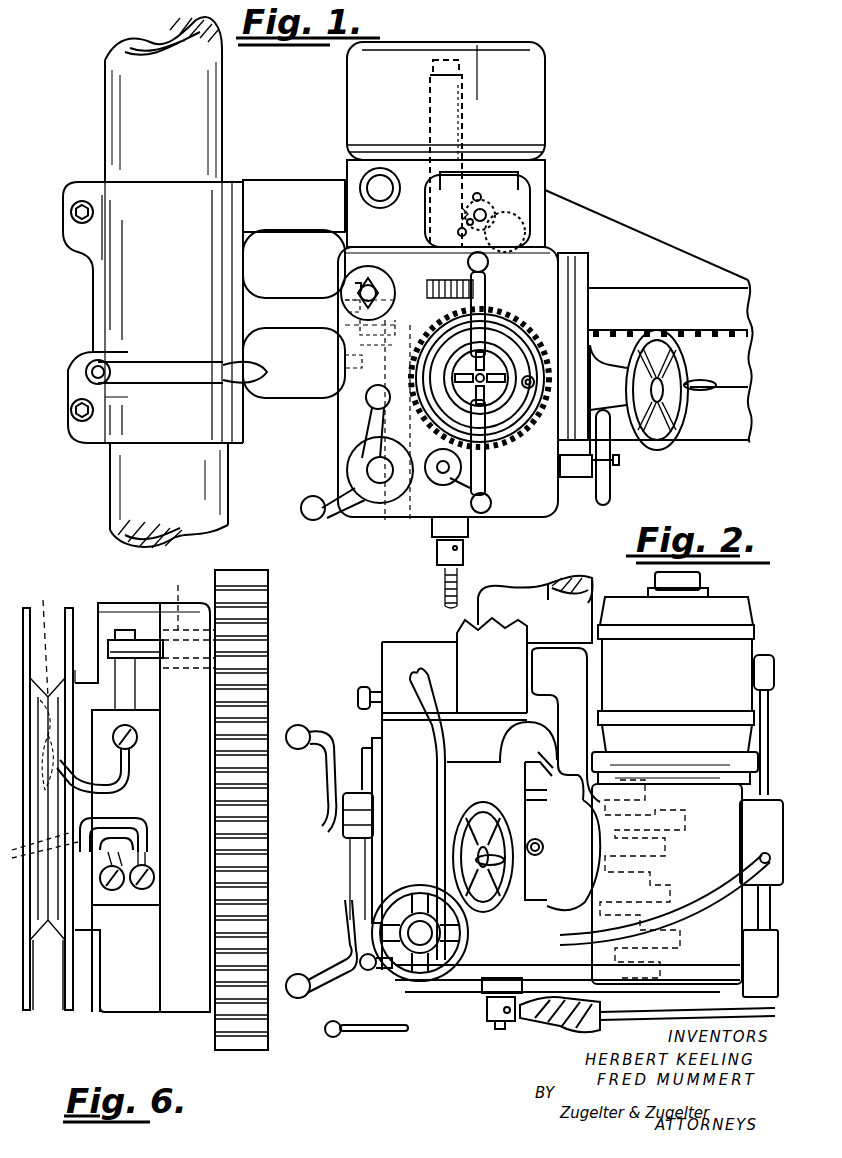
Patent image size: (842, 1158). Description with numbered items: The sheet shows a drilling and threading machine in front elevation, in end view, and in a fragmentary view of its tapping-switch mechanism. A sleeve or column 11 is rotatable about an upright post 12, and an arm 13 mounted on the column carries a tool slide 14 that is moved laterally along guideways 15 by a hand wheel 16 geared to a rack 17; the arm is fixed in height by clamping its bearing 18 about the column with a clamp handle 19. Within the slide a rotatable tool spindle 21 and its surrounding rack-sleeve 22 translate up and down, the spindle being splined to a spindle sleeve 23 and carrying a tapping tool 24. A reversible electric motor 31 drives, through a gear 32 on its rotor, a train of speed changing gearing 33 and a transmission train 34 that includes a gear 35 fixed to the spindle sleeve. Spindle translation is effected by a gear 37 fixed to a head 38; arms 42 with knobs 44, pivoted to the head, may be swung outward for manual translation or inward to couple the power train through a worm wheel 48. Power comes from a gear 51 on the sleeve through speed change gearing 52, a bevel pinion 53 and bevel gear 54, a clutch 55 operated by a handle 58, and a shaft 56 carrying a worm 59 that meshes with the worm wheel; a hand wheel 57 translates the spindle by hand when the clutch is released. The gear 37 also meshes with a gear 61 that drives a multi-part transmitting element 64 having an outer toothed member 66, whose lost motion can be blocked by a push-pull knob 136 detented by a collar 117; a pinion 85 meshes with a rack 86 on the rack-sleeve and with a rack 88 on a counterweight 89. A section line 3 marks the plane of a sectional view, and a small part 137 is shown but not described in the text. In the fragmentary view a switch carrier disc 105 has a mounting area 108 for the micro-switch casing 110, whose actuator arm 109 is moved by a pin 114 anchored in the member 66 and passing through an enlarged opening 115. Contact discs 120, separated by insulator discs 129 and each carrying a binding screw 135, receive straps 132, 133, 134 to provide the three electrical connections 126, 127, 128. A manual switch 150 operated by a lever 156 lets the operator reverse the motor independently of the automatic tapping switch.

In FIG. 1, the section line / shaft axis 3 is at (464, 52).
In FIG. 1, the sleeve or column 11 is at (205, 492).
In FIG. 2, the sleeve or column 11 is at (585, 616).
In FIG. 1, the upright post 12 is at (133, 40).
In FIG. 2, the upright post 12 is at (572, 584).
In FIG. 1, the arm 13 is at (724, 262).
In FIG. 2, the arm 13 is at (547, 656).
In FIG. 1, the tool slide 14 is at (600, 292).
In FIG. 2, the tool slide 14 is at (361, 725).
In FIG. 1, the guideways 15 is at (686, 297).
In FIG. 2, the guideways 15 is at (541, 870).
In FIG. 1, the hand wheel 16 is at (690, 376).
In FIG. 2, the hand wheel 16 is at (474, 810).
In FIG. 1, the rack 17 is at (706, 333).
In FIG. 2, the rack 17 is at (537, 796).
In FIG. 1, the bearing 18 is at (232, 195).
In FIG. 2, the bearing 18 is at (592, 678).
In FIG. 1, the clamp handle 19 is at (200, 372).
In FIG. 1, the tool spindle 21 is at (470, 537).
In FIG. 2, the tool spindle 21 is at (505, 996).
In FIG. 1, the rack-sleeve 22 is at (437, 129).
In FIG. 1, the spindle sleeve 23 is at (432, 302).
In FIG. 2, the spindle sleeve 23 is at (478, 978).
In FIG. 1, the tapping or threading tool 24 is at (458, 590).
In FIG. 2, the tapping or threading tool 24 is at (487, 1034).
In FIG. 2, the reversible electric motor 31 is at (722, 604).
In FIG. 2, the gear 32 is at (688, 800).
In FIG. 2, the train of speed changing gearing 33 is at (695, 846).
In FIG. 2, the train of transmission gearing 34 is at (618, 962).
In FIG. 2, the gear 35 is at (500, 938).
In FIG. 1, the gear 37 is at (503, 332).
In FIG. 1, the head 38 is at (503, 424).
In FIG. 2, the head 38 is at (356, 838).
In FIG. 1, the manually operated arms or handles 42 is at (490, 306).
In FIG. 2, the manually operated arms or handles 42 is at (326, 780).
In FIG. 1, the manipulating knobs 44 is at (442, 263).
In FIG. 2, the manipulating knobs 44 is at (365, 978).
In FIG. 1, the worm wheel 48 is at (503, 442).
In FIG. 1, the gear 51 is at (430, 285).
In FIG. 1, the train of speed change gearing 52 is at (345, 368).
In FIG. 1, the bevel pinion 53 is at (375, 437).
In FIG. 1, the bevel gear 54 is at (433, 478).
In FIG. 1, the clutch 55 is at (440, 486).
In FIG. 1, the shaft 56 is at (522, 490).
In FIG. 1, the hand wheel 57 is at (606, 486).
In FIG. 1, the handle 58 is at (448, 490).
In FIG. 2, the handle 58 is at (370, 972).
In FIG. 1, the worm 59 is at (502, 500).
In FIG. 1, the gear 61 is at (498, 286).
In FIG. 1, the multi-part transmitting element 64 is at (512, 212).
In FIG. 6, the outer toothed member 66 is at (262, 672).
In FIG. 1, the pinion 85 is at (460, 215).
In FIG. 1, the rack 86 is at (452, 110).
In FIG. 1, the rack 88 is at (509, 209).
In FIG. 1, the counterweight 89 is at (520, 222).
In FIG. 6, the tapping switch carrier disc 105 is at (106, 606).
In FIG. 6, the offset mounting area 108 is at (160, 990).
In FIG. 6, the actuator arm 109 is at (125, 630).
In FIG. 6, the micro-switch casing 110 is at (130, 898).
In FIG. 6, the pin or stud 114 is at (146, 640).
In FIG. 6, the enlarged opening 115 is at (177, 594).
In FIG. 2, the collar 117 is at (380, 690).
In FIG. 6, the metallic contact discs 120 is at (48, 821).
In FIG. 6, the electrical connection 126 is at (114, 890).
In FIG. 6, the electrical connection 127 is at (154, 879).
In FIG. 6, the electrical connection 128 is at (138, 739).
In FIG. 6, the insulator discs 129 is at (28, 1010).
In FIG. 6, the insulation covered conductor or strap 132 is at (102, 824).
In FIG. 6, the insulation covered conductor or strap 133 is at (148, 826).
In FIG. 6, the insulation covered conductor or strap 134 is at (130, 778).
In FIG. 6, the binding screw 135 is at (46, 691).
In FIG. 1, the knob or handle 136 is at (458, 234).
In FIG. 2, the knob or handle 136 is at (358, 694).
In FIG. 1, the pin 137 is at (451, 227).
In FIG. 2, the manual switch 150 is at (773, 985).
In FIG. 2, the lever 156 is at (410, 1034).